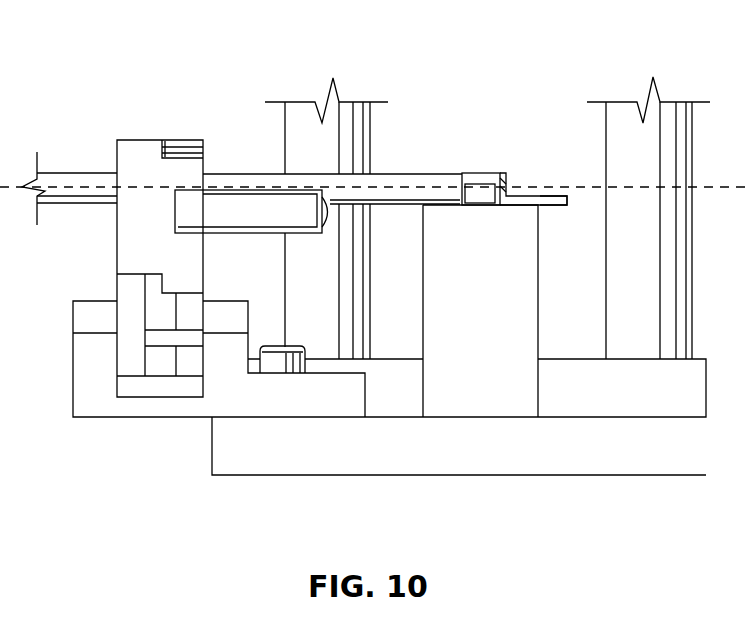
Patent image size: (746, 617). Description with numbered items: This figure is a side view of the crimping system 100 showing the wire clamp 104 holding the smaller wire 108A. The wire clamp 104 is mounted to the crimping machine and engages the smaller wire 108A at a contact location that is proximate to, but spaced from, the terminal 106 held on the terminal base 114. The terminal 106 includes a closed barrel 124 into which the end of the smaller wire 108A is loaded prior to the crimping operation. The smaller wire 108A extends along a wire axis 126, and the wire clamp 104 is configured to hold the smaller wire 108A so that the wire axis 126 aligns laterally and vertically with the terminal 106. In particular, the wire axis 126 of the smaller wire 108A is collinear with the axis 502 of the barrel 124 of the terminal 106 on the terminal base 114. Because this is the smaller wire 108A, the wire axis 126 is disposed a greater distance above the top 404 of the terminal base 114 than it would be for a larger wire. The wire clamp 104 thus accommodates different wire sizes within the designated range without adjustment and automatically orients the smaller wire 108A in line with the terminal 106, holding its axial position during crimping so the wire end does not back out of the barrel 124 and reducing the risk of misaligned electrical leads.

The crimping system 100 is at (236, 60).
The wire clamp 104 is at (112, 443).
The terminal 106 is at (508, 162).
The smaller wire 108A is at (238, 172).
The terminal base 114 is at (480, 397).
The barrel 124 is at (480, 172).
The wire axis 126 is at (80, 188).
The top of the terminal base 404 is at (441, 205).
The axis of the barrel 502 is at (547, 187).